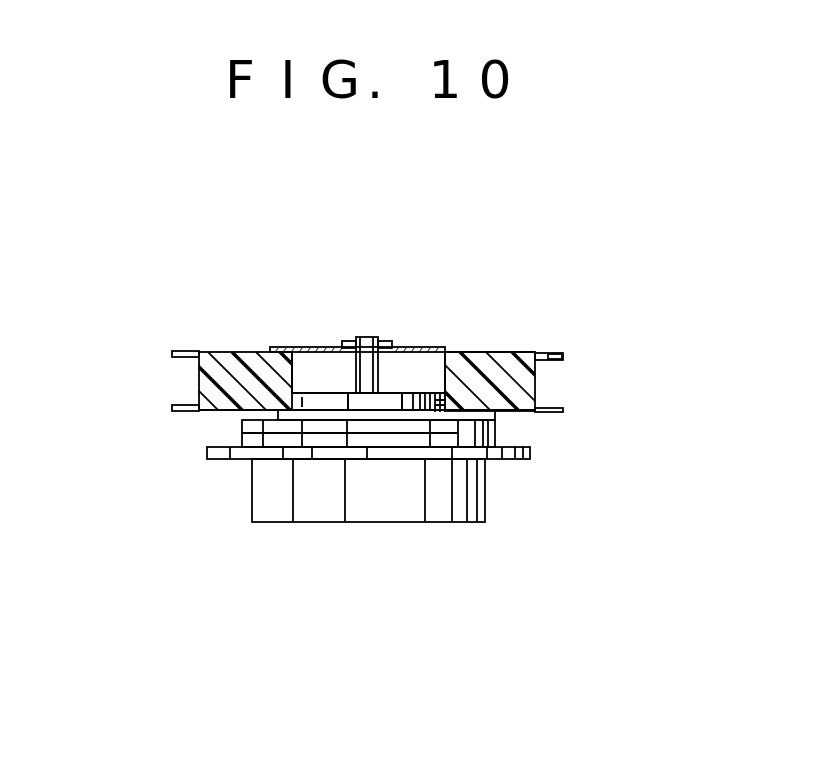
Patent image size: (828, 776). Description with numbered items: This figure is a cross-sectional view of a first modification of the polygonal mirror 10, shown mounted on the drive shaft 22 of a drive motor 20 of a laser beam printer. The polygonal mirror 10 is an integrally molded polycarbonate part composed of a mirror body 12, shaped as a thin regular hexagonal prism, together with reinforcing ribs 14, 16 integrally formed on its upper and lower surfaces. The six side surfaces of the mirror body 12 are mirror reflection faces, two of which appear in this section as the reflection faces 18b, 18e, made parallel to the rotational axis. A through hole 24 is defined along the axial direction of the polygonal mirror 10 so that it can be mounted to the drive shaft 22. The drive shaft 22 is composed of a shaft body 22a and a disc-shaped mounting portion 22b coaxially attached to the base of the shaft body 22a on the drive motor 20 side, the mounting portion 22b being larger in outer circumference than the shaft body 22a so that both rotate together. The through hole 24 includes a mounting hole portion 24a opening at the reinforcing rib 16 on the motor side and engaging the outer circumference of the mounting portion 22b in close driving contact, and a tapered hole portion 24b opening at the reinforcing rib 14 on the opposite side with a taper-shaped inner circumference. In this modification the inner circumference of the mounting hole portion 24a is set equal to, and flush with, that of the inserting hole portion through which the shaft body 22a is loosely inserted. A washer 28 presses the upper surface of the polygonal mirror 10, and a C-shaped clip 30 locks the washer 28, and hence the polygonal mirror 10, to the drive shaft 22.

The polygonal mirror 10 is at (524, 345).
The mirror body 12 is at (474, 348).
The reinforcing rib 14 is at (563, 356).
The reinforcing rib 16 is at (563, 410).
The reflection face 18b is at (198, 384).
The reflection face 18e is at (538, 381).
The drive motor 20 is at (480, 523).
The drive shaft 22 is at (455, 208).
The shaft body 22a is at (371, 337).
The mounting portion 22b is at (390, 398).
The through hole 24 is at (437, 582).
The mounting hole portion 24a is at (436, 402).
The tapered hole portion 24b is at (443, 367).
The washer 28 is at (290, 348).
The clip 30 is at (352, 342).